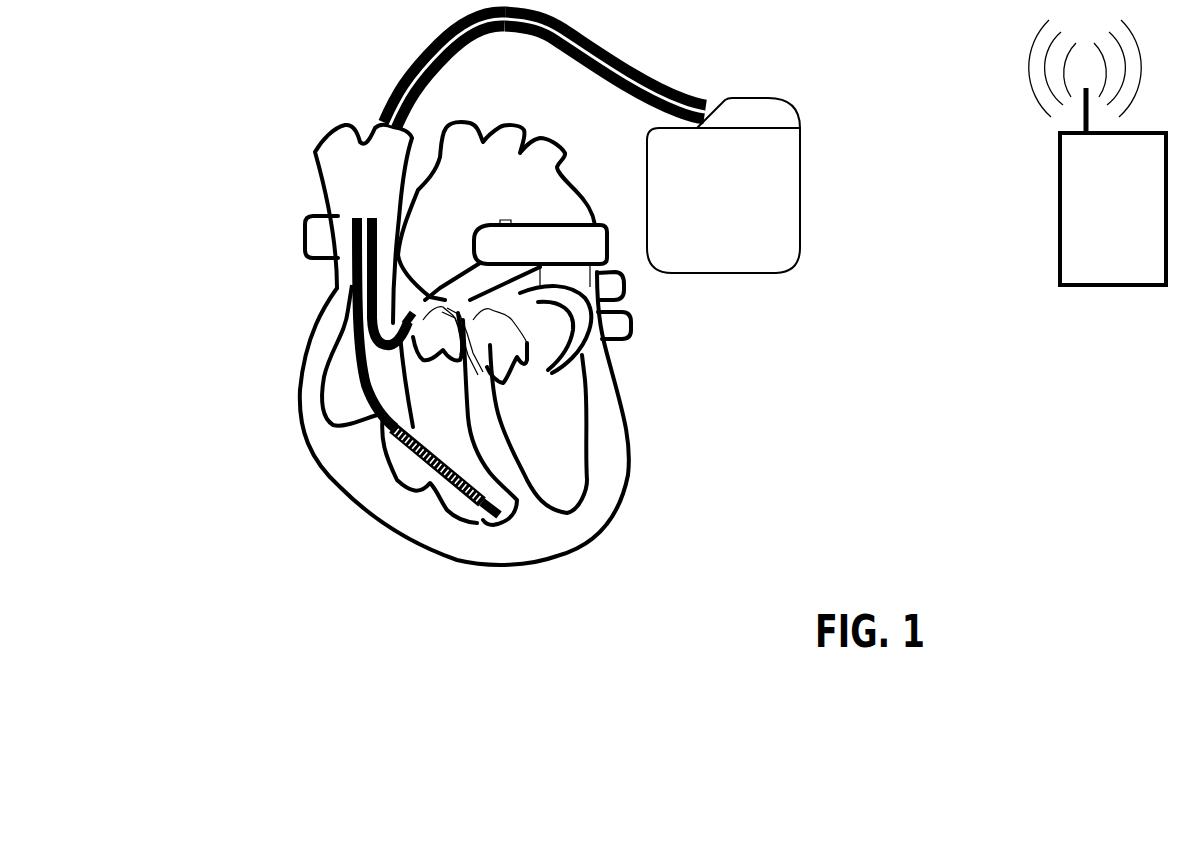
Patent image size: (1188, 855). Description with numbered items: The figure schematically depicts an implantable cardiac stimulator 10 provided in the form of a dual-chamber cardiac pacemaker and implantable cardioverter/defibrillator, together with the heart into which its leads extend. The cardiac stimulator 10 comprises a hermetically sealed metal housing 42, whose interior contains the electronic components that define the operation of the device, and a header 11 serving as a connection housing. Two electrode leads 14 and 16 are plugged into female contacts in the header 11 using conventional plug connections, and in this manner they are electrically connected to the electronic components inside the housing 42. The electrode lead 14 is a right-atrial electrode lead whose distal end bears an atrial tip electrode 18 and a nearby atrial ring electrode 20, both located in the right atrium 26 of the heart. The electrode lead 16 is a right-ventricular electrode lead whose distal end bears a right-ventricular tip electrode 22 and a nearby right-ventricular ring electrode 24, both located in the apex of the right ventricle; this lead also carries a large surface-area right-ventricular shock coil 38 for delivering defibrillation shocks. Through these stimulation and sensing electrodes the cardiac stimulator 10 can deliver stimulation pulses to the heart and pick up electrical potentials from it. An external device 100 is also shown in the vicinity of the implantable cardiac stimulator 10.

The cardiac stimulator 10 is at (777, 242).
The header 11 is at (777, 122).
The electrode lead 14 is at (598, 83).
The electrode lead 16 is at (388, 100).
The atrial tip electrode 18 is at (403, 316).
The atrial ring electrode 20 is at (398, 335).
The right-ventricular tip electrode 22 is at (499, 514).
The right-ventricular ring electrode 24 is at (493, 511).
The right atrium 26 is at (343, 395).
The right-ventricular shock coil 38 is at (412, 447).
The housing 42 is at (773, 198).
The external device 100 is at (1105, 322).